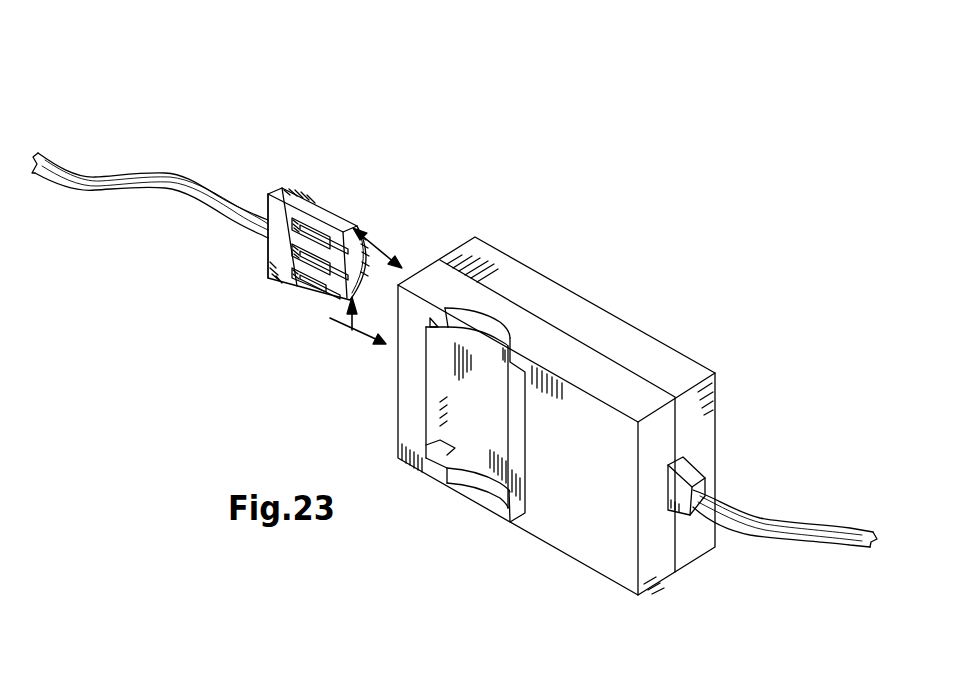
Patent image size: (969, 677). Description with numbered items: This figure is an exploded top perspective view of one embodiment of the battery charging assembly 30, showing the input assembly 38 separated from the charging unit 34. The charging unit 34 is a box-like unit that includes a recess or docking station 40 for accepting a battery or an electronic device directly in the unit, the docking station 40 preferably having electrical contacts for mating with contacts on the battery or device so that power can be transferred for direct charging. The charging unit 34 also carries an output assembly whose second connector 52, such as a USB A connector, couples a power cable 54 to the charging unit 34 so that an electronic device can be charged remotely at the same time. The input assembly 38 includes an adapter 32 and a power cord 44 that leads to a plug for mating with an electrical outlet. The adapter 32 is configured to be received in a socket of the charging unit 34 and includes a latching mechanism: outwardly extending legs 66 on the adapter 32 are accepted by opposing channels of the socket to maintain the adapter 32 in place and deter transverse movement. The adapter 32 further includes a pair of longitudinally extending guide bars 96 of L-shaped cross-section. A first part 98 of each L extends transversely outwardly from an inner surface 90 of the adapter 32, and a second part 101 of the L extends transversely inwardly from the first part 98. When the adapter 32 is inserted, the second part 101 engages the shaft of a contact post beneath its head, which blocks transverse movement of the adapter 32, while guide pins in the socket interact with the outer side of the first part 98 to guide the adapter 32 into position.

The battery charging assembly 30 is at (550, 135).
The adapter 32 is at (338, 212).
The charging unit 34 is at (607, 372).
The input assembly 38 is at (137, 120).
The docking station 40 is at (502, 422).
The power cord 44 is at (125, 187).
The second connector 52 is at (688, 472).
The power cable 54 is at (793, 518).
The outwardly extending legs 66 is at (278, 190).
The inner surface 90 is at (277, 253).
The guide bars 96 is at (362, 237).
The first part 98 is at (337, 232).
The second part 101 is at (313, 247).